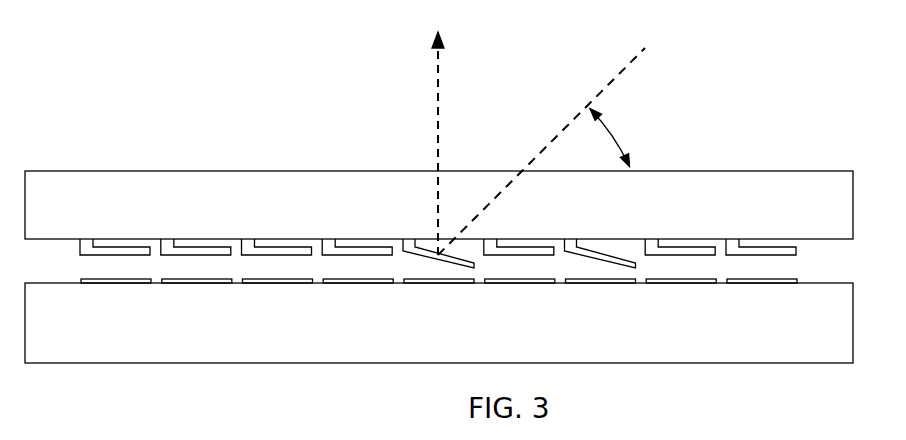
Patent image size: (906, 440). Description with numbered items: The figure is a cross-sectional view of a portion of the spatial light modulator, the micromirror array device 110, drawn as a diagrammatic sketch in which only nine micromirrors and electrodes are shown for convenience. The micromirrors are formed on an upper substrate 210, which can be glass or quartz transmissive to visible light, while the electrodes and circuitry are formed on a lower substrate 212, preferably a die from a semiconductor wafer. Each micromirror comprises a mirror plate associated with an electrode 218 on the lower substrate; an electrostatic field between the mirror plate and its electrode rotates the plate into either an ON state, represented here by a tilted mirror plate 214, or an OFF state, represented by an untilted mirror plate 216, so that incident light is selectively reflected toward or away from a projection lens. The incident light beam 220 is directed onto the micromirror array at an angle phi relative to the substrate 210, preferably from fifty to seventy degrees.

The micromirror array device 110 is at (439, 233).
The substrate 210 is at (172, 182).
The second substrate 212 is at (137, 352).
The actuated tilted element 214 is at (603, 250).
The non-actuated element 216 is at (750, 240).
The electrode 218 is at (371, 295).
The incident light beam 220 is at (598, 97).